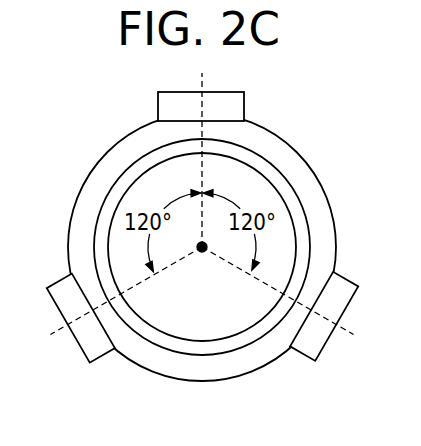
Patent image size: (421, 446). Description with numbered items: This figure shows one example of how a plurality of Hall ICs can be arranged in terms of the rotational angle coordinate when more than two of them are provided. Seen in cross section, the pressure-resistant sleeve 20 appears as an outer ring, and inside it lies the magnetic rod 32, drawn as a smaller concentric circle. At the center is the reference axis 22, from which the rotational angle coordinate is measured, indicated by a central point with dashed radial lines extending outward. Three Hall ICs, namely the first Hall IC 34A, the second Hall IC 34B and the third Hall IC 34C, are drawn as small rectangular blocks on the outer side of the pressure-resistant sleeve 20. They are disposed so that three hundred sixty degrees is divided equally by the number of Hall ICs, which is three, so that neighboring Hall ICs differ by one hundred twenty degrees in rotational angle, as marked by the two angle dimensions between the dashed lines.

The pressure-resistant sleeve 20 is at (320, 213).
The reference axis 22 is at (204, 252).
The magnetic rod 32 is at (257, 188).
The first Hall IC 34A is at (158, 107).
The second Hall IC 34B is at (100, 350).
The third Hall IC 34C is at (327, 341).